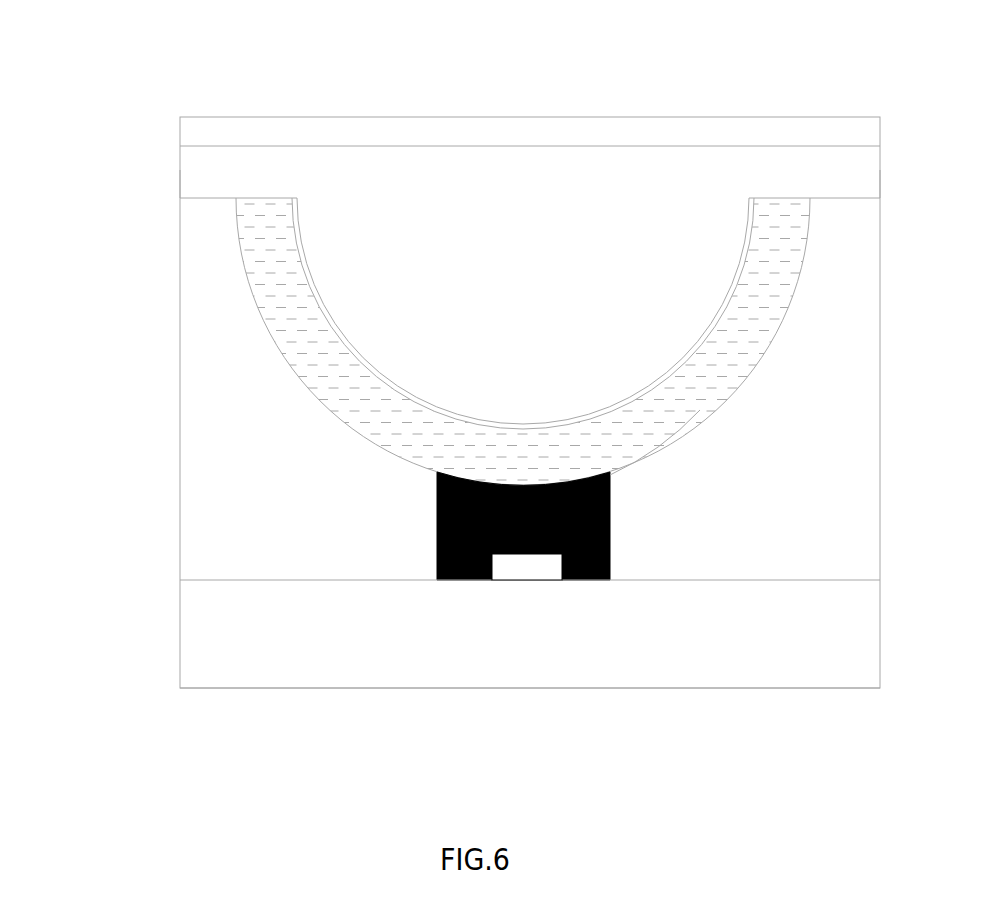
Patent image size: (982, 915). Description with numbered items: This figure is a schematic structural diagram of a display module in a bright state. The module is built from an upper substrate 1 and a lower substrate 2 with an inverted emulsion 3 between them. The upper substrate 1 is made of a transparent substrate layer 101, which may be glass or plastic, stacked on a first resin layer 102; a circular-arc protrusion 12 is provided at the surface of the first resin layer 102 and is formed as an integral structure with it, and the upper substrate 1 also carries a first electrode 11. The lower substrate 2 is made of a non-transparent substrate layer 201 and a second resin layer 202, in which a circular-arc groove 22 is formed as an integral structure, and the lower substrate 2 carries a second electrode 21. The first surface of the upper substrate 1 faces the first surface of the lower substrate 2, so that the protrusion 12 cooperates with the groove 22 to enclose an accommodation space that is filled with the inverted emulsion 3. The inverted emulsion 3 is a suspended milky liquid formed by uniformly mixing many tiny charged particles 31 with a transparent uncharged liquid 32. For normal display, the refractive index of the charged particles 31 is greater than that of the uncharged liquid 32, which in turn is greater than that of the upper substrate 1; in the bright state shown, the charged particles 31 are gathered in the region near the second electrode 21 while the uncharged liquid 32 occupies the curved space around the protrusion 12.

The upper substrate 1 is at (563, 38).
The transparent substrate layer 101 is at (489, 144).
The first resin layer 102 is at (595, 165).
The first electrode 11 is at (302, 250).
The protrusion 12 is at (515, 415).
The inverted emulsion 3 is at (426, 389).
The charged particles 31 is at (458, 516).
The uncharged liquid 32 is at (296, 382).
The lower substrate 2 is at (530, 619).
The non-transparent substrate layer 201 is at (540, 688).
The second resin layer 202 is at (670, 555).
The second electrode 21 is at (522, 575).
The groove 22 is at (658, 457).